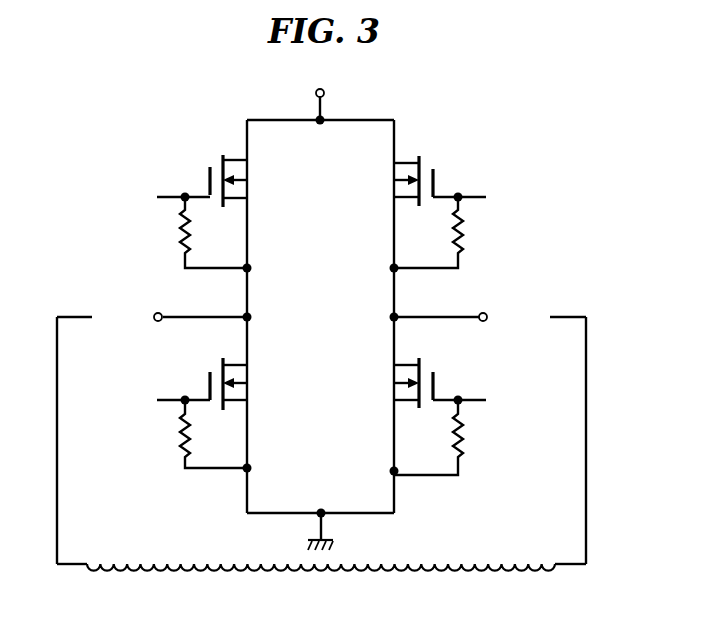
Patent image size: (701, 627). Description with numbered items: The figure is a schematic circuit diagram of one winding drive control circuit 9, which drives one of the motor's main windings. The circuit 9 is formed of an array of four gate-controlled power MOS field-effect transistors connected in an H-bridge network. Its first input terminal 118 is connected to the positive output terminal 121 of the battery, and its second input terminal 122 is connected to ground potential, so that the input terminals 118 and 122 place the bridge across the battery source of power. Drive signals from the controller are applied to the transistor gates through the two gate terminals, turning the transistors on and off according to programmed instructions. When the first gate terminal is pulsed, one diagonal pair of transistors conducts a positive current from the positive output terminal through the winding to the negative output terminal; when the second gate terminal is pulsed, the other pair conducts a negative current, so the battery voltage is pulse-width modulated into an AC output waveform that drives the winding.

The winding drive control circuit 9 is at (156, 150).
The first input terminal 118 is at (323, 122).
The positive output terminal 121 is at (325, 95).
The second input terminal 122 is at (325, 515).